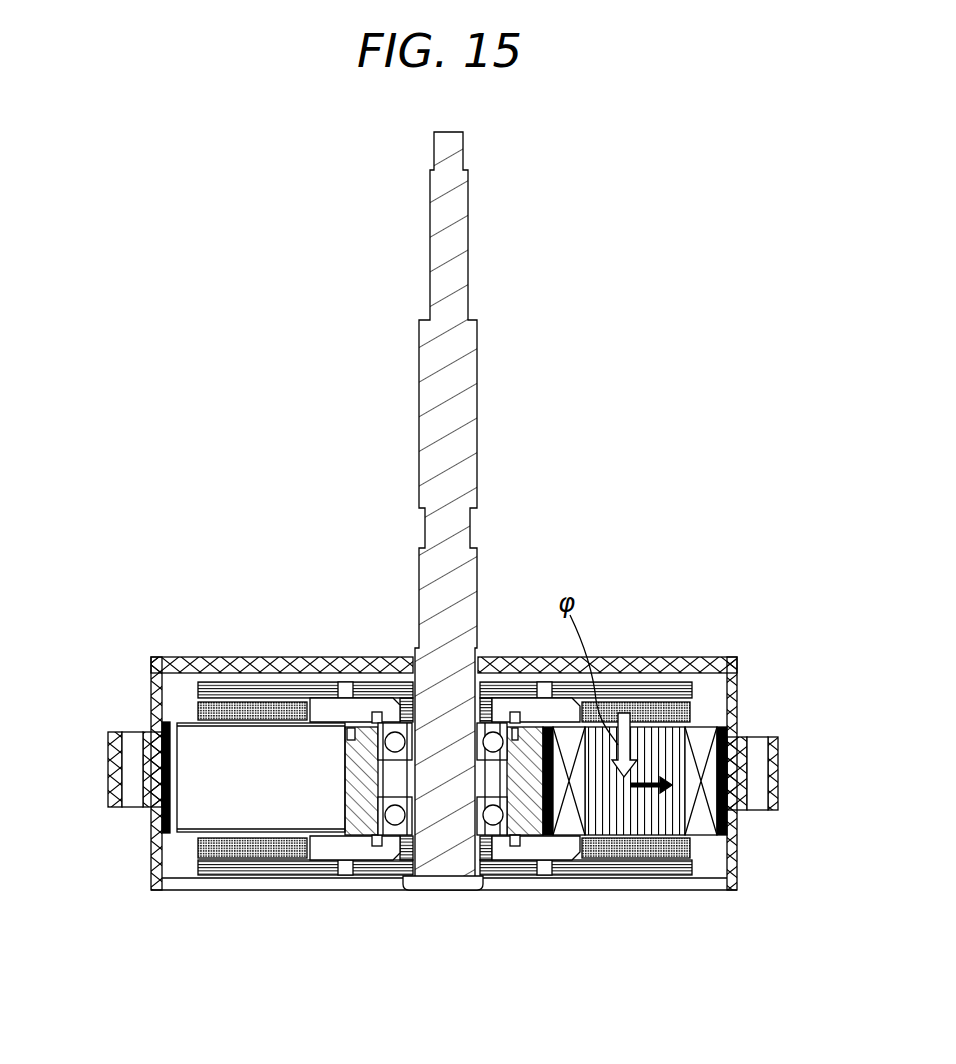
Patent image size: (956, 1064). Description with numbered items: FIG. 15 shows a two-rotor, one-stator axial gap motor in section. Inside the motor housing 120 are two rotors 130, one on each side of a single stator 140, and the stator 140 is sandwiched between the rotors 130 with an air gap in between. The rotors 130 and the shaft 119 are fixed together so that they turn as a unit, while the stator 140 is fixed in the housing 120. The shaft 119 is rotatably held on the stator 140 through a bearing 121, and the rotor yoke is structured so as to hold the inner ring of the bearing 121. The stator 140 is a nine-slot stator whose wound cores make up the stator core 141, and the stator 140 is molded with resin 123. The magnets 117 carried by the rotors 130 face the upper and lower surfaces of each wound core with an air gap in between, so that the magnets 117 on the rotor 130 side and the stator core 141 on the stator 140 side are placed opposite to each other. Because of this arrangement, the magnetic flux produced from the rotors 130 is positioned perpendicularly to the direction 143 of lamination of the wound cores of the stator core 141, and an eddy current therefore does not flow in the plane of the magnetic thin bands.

The magnet 117 is at (280, 705).
The shaft 119 is at (455, 312).
The motor housing 120 is at (705, 668).
The bearing 121 is at (492, 823).
The resin 123 is at (725, 820).
The rotor 130 is at (220, 690).
The stator 140 is at (205, 745).
The stator core 141 is at (665, 750).
The direction of lamination 143 is at (652, 790).